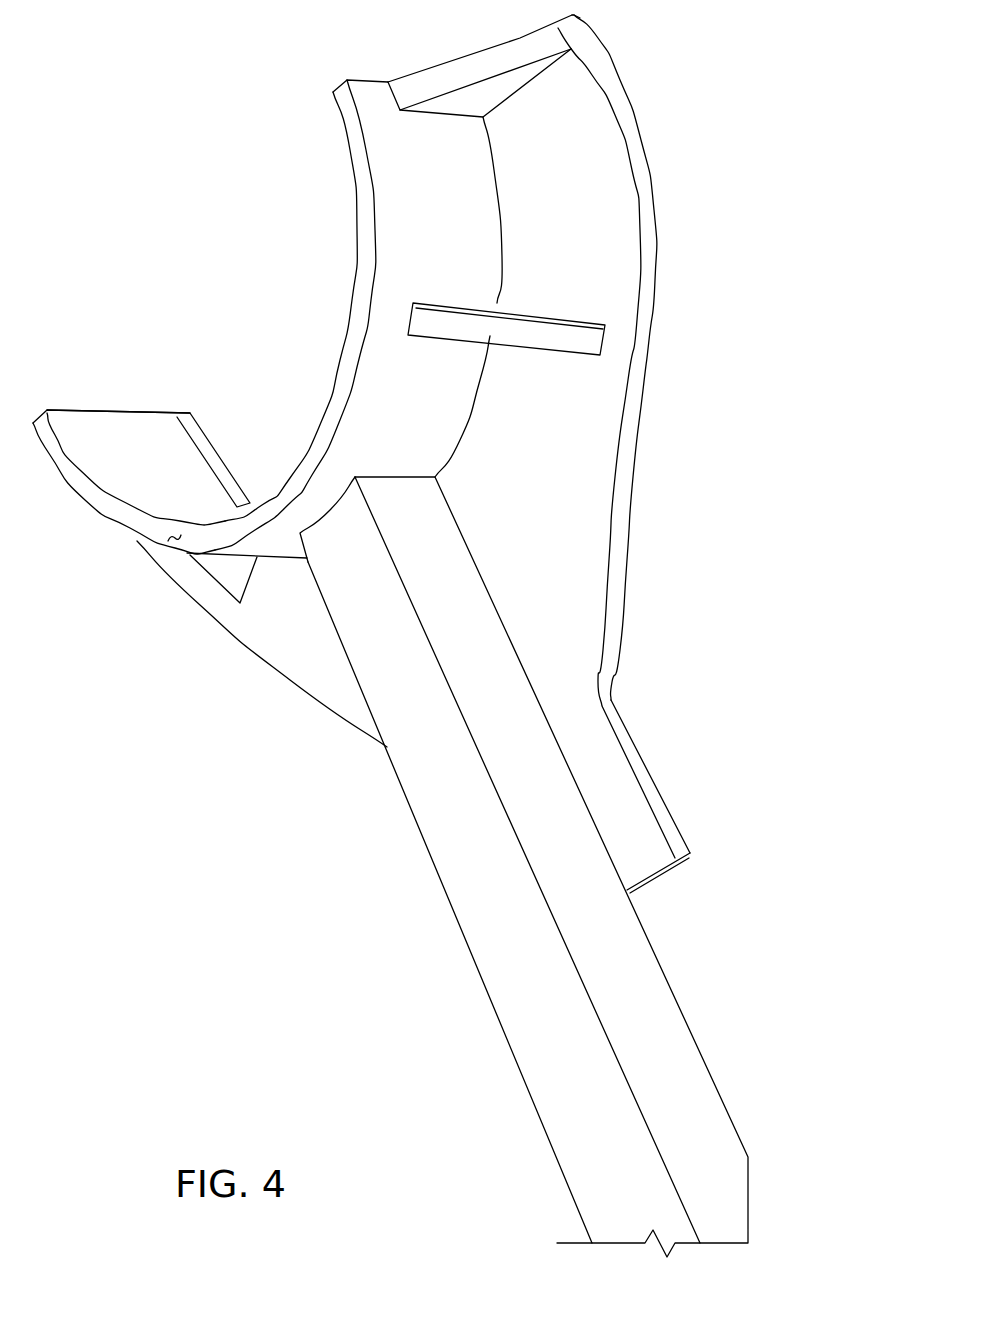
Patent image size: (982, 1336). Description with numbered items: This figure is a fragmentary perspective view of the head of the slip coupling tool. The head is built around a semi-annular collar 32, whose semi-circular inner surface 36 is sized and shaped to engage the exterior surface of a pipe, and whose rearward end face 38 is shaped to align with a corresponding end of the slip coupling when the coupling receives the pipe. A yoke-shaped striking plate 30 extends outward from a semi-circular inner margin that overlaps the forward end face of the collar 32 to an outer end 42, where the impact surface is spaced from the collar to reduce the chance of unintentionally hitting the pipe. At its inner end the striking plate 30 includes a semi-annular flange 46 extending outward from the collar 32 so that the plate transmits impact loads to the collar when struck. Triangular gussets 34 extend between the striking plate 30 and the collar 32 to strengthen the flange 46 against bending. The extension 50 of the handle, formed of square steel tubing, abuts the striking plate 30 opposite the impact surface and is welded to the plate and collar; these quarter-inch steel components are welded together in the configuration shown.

The striking plate 30 is at (633, 478).
The semi-annular collar 32 is at (100, 408).
The gussets 34 is at (487, 50).
The inner surface 36 is at (142, 461).
The rearward end face 38 is at (174, 544).
The outer end 42 is at (655, 873).
The semi-annular flange 46 is at (612, 50).
The extension 50 is at (700, 1052).